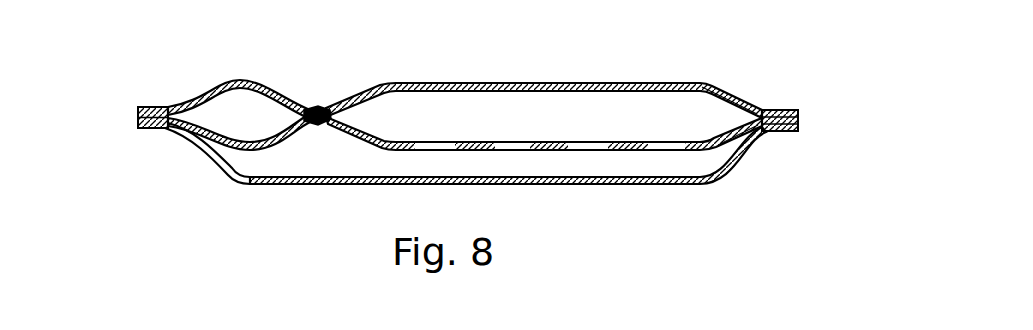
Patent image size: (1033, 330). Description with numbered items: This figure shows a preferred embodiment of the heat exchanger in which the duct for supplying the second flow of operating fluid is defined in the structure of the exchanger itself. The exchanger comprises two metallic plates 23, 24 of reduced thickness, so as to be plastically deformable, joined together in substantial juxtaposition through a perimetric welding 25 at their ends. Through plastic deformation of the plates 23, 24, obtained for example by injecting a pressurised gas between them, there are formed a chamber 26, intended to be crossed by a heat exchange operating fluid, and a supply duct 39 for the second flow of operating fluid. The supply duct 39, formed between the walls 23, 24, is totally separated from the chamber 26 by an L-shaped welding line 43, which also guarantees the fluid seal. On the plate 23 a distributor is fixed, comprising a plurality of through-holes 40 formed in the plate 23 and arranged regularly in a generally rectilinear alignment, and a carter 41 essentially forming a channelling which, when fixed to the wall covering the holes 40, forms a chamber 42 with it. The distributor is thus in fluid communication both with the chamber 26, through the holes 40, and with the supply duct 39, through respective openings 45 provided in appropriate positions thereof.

The metallic plate 23 is at (154, 107).
The metallic plate 24 is at (160, 130).
The perimetric welding 25 is at (138, 116).
The chamber 26 is at (655, 113).
The supply duct 39 is at (239, 115).
The through-holes 40 is at (436, 142).
The carter 41 is at (312, 186).
The chamber 42 is at (547, 163).
The L-shaped welding line 43 is at (312, 108).
The openings 45 is at (247, 151).